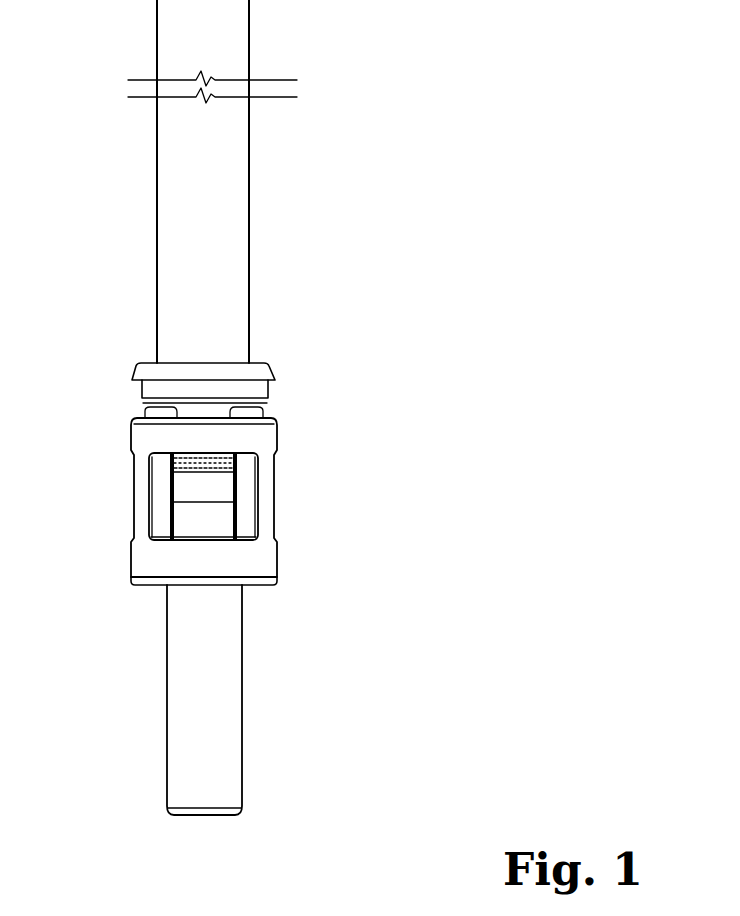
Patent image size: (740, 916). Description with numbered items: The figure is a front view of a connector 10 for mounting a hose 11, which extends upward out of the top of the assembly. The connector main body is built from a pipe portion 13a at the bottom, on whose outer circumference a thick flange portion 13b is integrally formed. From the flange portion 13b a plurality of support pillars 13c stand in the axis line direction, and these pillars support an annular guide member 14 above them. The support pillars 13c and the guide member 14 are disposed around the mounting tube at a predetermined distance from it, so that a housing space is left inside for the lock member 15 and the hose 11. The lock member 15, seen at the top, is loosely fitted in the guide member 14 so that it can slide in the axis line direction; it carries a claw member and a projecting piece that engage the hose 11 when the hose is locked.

The connector 10 is at (48, 430).
The hose 11 is at (243, 203).
The pipe portion 13a is at (222, 675).
The thick flange portion 13b is at (263, 560).
The support pillars 13c is at (142, 500).
The guide member 14 is at (262, 435).
The lock member 15 is at (262, 373).